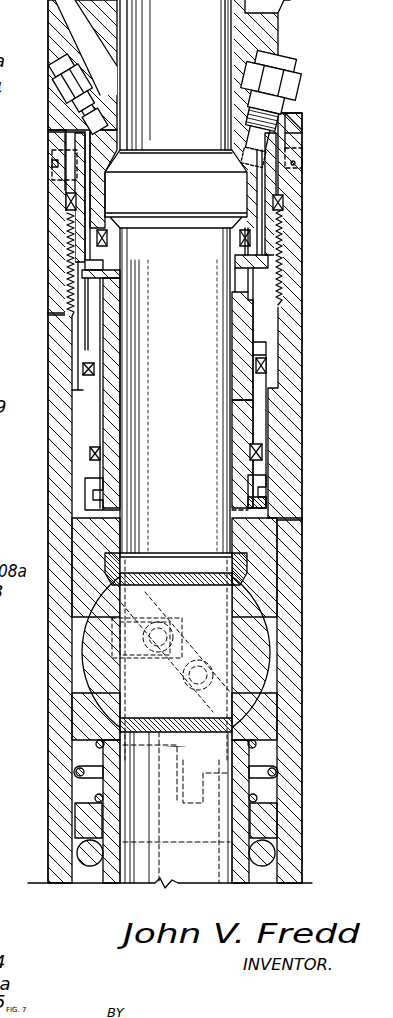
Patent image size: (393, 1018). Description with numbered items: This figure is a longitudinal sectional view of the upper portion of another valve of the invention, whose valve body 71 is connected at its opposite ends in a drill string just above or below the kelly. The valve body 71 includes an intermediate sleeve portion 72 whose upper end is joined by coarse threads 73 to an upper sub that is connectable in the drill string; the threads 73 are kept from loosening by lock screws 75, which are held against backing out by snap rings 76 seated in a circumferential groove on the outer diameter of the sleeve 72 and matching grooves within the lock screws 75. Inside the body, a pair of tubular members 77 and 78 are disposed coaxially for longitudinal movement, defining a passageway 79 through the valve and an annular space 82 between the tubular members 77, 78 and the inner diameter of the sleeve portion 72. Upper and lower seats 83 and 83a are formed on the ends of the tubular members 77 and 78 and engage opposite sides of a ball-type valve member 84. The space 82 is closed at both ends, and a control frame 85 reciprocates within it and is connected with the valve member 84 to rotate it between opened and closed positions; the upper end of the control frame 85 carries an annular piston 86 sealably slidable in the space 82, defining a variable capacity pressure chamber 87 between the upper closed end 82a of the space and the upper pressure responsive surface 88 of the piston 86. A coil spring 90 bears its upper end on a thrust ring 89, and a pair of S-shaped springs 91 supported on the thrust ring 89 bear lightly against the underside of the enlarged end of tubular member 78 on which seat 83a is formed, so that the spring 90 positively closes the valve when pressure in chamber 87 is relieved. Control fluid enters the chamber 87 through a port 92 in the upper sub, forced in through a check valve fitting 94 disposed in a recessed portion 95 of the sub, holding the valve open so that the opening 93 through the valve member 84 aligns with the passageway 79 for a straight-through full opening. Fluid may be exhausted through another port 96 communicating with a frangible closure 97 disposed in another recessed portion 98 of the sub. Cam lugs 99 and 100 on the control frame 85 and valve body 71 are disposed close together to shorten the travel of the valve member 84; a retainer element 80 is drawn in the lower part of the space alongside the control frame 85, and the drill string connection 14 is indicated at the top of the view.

The tubing string 14 is at (288, 3).
The valve body 71 is at (305, 375).
The intermediate sleeve portion 72 is at (305, 550).
The coarse threads 73 is at (278, 254).
The lock screws 75 is at (45, 200).
The snap rings 76 is at (296, 163).
The tubular member 77 is at (233, 357).
The tubular member 78 is at (220, 862).
The passageway 79 is at (230, 433).
The lower retainer ring 80 is at (267, 485).
The annular space 82 is at (263, 787).
The upper closed end 82a is at (255, 282).
The upper seat 83 is at (257, 623).
The lower seat 83a is at (253, 688).
The ball-type valve member 84 is at (275, 652).
The control frame 85 is at (263, 422).
The annular piston 86 is at (257, 383).
The variable capacity pressure chamber 87 is at (90, 322).
The upper pressure responsive surface 88 is at (263, 338).
The thrust ring 89 is at (263, 823).
The coil spring 90 is at (267, 865).
The S-shaped springs 91 is at (76, 766).
The port 92 is at (262, 228).
The opening 93 is at (230, 610).
The check valve fitting 94 is at (302, 85).
The recessed portion 95 is at (245, 23).
The port 96 is at (96, 240).
The frangible closure 97 is at (58, 90).
The recessed portion 98 is at (63, 20).
The cam lug 99 is at (202, 656).
The cam lug 100 is at (157, 600).